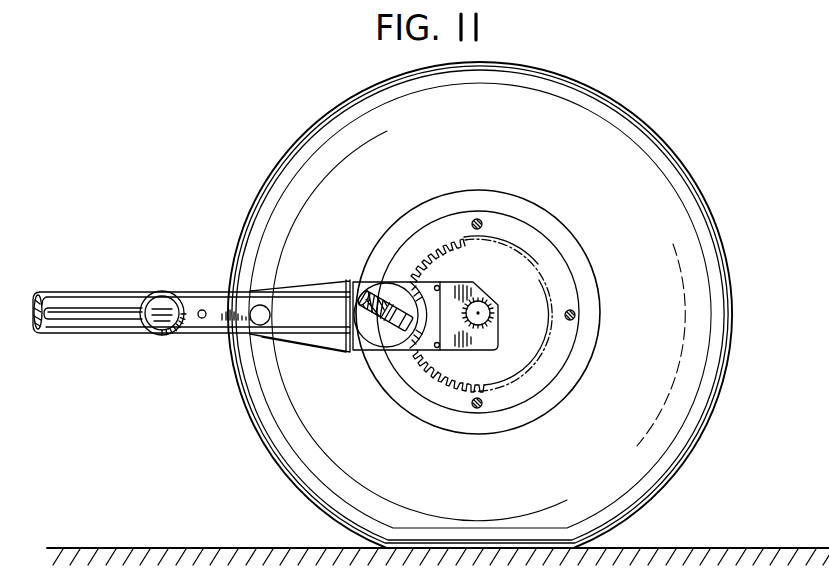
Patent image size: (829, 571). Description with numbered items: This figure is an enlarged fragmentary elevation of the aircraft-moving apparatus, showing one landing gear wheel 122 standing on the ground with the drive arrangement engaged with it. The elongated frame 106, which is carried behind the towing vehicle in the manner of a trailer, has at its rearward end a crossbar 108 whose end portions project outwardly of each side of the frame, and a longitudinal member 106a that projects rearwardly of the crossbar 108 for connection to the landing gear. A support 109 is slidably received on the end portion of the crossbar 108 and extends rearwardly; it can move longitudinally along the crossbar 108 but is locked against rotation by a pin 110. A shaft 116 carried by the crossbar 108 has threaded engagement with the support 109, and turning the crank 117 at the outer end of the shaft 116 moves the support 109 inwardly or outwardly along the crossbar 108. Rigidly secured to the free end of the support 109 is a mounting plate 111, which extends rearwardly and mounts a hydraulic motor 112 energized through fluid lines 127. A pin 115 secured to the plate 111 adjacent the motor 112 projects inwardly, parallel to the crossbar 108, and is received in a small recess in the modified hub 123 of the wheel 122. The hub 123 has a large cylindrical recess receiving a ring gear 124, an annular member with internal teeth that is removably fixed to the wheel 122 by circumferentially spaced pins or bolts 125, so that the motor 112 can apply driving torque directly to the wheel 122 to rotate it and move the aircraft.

The elongated frame 106 is at (86, 320).
The longitudinal member 106a is at (82, 293).
The crossbar 108 is at (156, 325).
The supports 109 is at (313, 298).
The pins 110 is at (164, 300).
The mounting plates 111 is at (493, 340).
The hydraulic motors 112 is at (377, 338).
The pins 115 is at (485, 309).
The shafts 116 is at (199, 321).
The crank 117 is at (209, 307).
The wheel 122 is at (727, 343).
The modified hub 123 is at (556, 232).
The ring gear 124 is at (541, 272).
The pins or bolts 125 is at (478, 222).
The fluid lines 127 is at (377, 299).